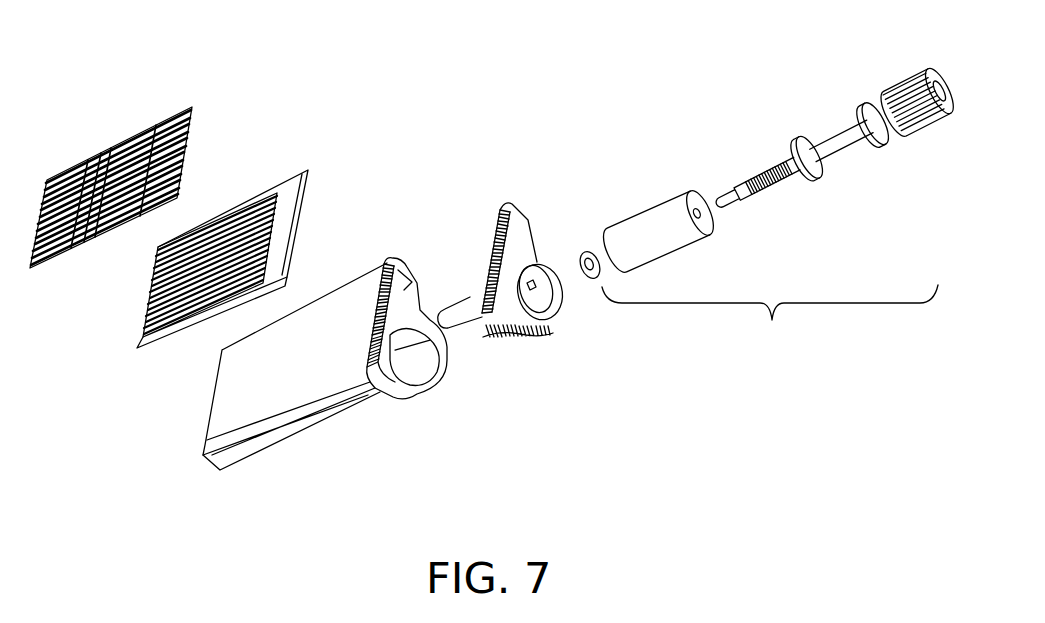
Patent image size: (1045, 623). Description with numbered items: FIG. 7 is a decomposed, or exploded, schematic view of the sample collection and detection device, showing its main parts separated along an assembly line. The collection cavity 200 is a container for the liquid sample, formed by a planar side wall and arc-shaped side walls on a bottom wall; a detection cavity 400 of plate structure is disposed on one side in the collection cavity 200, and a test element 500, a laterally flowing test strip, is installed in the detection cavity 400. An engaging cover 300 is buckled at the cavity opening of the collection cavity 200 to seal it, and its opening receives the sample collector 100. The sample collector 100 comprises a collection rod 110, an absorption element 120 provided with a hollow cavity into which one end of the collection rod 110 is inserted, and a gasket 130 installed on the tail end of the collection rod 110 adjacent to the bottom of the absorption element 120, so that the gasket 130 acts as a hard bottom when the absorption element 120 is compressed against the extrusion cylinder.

The sample collector 100 is at (770, 321).
The collection rod 110 is at (828, 140).
The absorption element 120 is at (665, 202).
The gasket 130 is at (583, 248).
The collection cavity 200 is at (280, 392).
The engaging cover 300 is at (497, 223).
The detection cavity 400 is at (290, 203).
The test element 500 is at (172, 137).